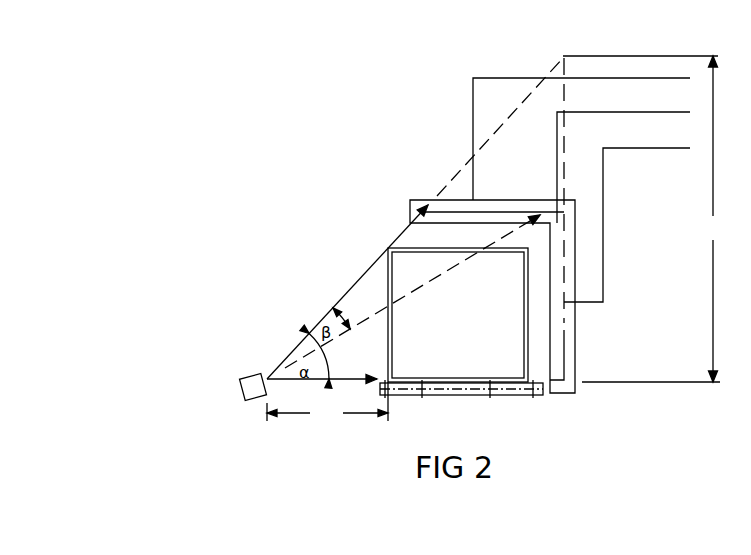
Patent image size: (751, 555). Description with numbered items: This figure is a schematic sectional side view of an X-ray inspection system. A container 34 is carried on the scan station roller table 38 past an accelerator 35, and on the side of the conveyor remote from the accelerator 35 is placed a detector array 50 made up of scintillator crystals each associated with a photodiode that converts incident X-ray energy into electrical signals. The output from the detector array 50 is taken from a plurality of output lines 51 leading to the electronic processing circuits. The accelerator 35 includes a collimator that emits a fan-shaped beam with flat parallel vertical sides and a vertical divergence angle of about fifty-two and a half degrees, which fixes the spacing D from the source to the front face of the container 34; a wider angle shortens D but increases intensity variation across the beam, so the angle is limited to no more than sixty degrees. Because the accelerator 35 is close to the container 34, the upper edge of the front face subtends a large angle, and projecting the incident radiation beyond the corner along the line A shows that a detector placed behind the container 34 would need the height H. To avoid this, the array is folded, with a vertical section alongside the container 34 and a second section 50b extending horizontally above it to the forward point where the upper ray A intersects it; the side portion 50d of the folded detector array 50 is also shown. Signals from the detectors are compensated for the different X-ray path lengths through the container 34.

The container 34 is at (410, 267).
The accelerator 35 is at (252, 380).
The scan station roller table 38 is at (463, 388).
The detector array 50 is at (535, 225).
The second section 50b is at (487, 203).
The hood side portion 50d is at (564, 333).
The output lines 51 is at (473, 107).
The line A is at (452, 176).
The height H is at (641, 219).
The spacing D is at (327, 414).